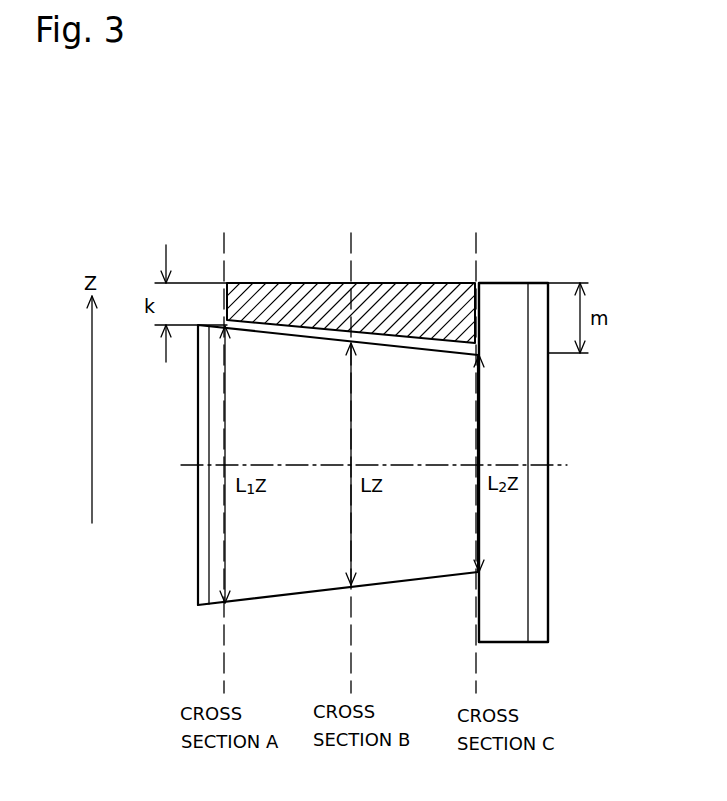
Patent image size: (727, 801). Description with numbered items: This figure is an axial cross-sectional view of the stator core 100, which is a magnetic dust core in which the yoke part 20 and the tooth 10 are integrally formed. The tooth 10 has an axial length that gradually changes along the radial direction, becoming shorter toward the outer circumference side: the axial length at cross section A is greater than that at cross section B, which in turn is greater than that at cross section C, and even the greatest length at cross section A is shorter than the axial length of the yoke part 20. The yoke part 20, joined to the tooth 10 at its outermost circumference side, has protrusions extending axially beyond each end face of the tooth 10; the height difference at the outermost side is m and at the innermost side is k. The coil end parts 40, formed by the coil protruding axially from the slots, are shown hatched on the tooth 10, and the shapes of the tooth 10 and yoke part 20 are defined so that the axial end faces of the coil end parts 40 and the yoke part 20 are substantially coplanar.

The tooth 10 is at (413, 583).
The yoke part 20 is at (541, 410).
The coil end parts 40 is at (410, 300).
The stator core 100 is at (602, 239).